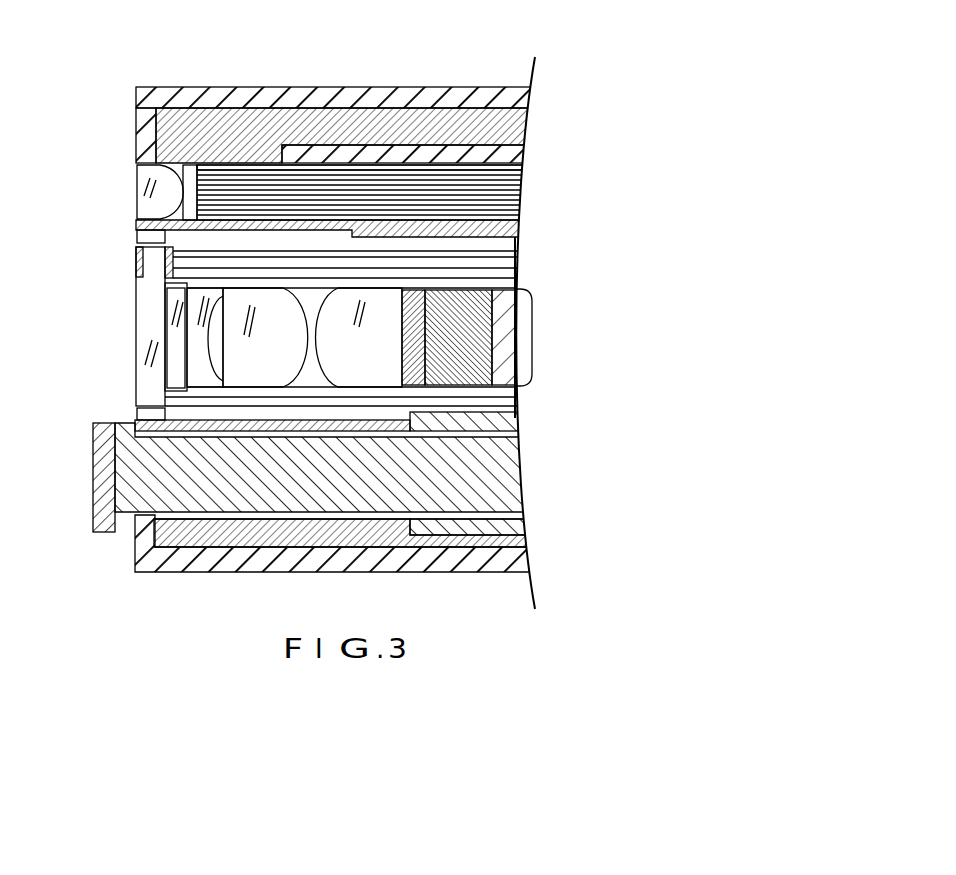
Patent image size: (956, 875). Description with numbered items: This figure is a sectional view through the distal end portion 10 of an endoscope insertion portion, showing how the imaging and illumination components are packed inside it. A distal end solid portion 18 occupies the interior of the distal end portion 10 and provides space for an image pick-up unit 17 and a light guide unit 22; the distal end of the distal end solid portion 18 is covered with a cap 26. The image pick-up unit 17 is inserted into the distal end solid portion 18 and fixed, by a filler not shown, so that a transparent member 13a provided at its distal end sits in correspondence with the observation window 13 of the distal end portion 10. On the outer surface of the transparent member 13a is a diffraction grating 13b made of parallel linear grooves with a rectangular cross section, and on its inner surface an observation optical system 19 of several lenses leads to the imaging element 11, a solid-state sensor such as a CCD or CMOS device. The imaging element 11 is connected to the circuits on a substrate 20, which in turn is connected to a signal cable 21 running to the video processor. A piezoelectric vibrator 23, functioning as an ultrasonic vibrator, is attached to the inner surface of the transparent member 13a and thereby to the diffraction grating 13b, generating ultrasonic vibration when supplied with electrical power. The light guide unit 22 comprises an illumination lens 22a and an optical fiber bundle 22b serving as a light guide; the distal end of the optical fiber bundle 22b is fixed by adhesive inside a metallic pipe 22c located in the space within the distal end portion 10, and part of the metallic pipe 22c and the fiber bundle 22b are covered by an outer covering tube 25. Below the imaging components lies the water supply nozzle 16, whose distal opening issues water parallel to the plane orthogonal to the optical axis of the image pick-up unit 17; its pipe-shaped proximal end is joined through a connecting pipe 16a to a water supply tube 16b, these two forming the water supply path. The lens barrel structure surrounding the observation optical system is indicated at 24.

The distal end portion 10 is at (138, 84).
The imaging element 11 is at (425, 315).
The observation window 13 is at (90, 332).
The transparent member 13a is at (150, 313).
The diffraction grating 13b is at (136, 265).
The water supply nozzle 16 is at (313, 479).
The connecting pipe 16a is at (520, 432).
The water supply tube 16b is at (520, 530).
The image pick-up unit 17 is at (540, 323).
The distal end solid portion 18 is at (457, 122).
The observation optical system 19 is at (398, 362).
The substrate 20 is at (478, 345).
The signal cable 21 is at (507, 375).
The light guide unit 22 is at (428, 135).
The illumination lens 22a is at (183, 165).
The optical fiber bundle 22b is at (264, 180).
The metallic pipe 22c is at (352, 167).
The piezoelectric vibrator 23 is at (138, 240).
The lens barrel 24 is at (515, 255).
The outer covering tube 25 is at (330, 328).
The cap 26 is at (143, 135).